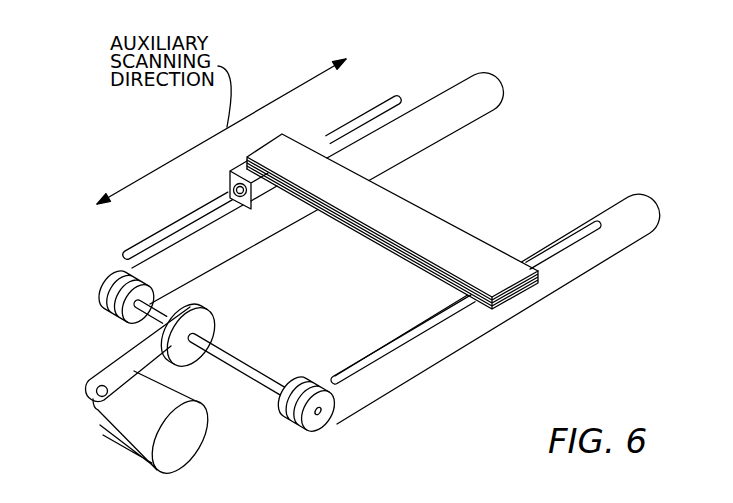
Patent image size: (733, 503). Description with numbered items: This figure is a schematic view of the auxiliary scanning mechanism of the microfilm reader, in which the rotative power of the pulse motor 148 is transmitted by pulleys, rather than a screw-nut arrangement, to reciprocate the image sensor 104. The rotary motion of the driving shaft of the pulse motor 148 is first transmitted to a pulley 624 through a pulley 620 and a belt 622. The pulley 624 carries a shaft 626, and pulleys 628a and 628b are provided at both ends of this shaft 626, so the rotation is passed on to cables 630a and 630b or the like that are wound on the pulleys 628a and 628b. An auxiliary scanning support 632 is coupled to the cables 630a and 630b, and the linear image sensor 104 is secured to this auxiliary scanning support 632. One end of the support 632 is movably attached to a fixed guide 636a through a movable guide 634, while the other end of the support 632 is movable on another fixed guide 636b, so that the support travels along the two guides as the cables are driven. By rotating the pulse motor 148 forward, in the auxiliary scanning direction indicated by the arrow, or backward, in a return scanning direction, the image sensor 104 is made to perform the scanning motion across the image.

The linear image sensor 104 is at (430, 230).
The pulse motor 148 is at (188, 438).
The pulley 620 is at (103, 406).
The belt 622 is at (97, 387).
The pulley 624 is at (208, 322).
The shaft 626 is at (250, 369).
The pulley 628a is at (105, 291).
The pulley 628b is at (318, 428).
The cable 630a is at (494, 88).
The cable 630b is at (633, 230).
The auxiliary scanning support 632 is at (530, 290).
The movable guide 634 is at (231, 184).
The fixed guide 636a is at (135, 246).
The fixed guide 636b is at (441, 324).